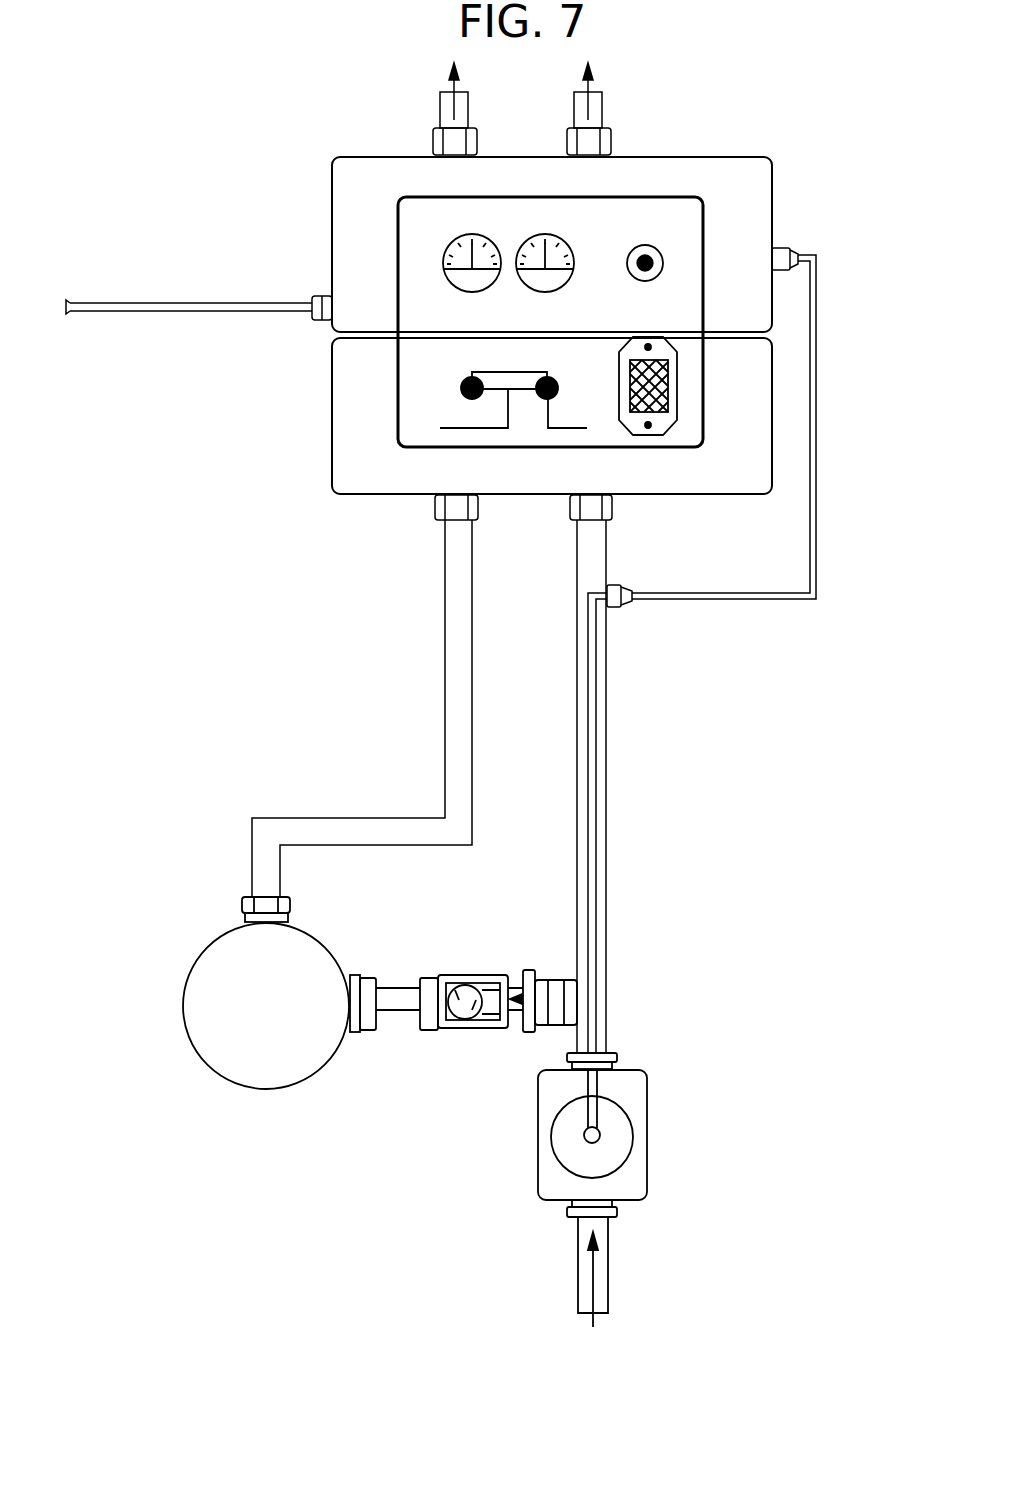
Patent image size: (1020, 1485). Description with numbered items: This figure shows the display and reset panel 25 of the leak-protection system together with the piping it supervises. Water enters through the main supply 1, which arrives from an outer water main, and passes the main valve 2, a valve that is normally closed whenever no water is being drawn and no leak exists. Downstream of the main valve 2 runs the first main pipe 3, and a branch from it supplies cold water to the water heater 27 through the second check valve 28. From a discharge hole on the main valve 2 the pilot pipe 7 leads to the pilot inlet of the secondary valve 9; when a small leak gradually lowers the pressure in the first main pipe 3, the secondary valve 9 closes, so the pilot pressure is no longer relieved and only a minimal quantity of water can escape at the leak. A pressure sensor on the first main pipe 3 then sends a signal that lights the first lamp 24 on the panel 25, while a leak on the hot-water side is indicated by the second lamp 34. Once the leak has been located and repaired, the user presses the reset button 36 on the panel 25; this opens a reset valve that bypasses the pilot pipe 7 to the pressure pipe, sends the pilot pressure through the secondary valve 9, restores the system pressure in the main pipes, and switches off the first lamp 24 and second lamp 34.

The main supply 1 is at (578, 1285).
The main valve 2 is at (538, 1140).
The first main pipe 3 is at (607, 925).
The pilot pipe 7 is at (206, 313).
The secondary valve 9 is at (332, 250).
The first lamp 24 is at (548, 428).
The panel 25 is at (410, 412).
The water heater 27 is at (253, 1090).
The second check valve 28 is at (470, 975).
The second lamp 34 is at (440, 428).
The reset button 36 is at (658, 252).